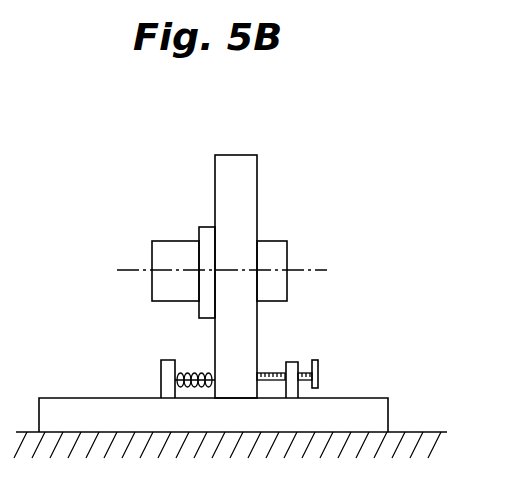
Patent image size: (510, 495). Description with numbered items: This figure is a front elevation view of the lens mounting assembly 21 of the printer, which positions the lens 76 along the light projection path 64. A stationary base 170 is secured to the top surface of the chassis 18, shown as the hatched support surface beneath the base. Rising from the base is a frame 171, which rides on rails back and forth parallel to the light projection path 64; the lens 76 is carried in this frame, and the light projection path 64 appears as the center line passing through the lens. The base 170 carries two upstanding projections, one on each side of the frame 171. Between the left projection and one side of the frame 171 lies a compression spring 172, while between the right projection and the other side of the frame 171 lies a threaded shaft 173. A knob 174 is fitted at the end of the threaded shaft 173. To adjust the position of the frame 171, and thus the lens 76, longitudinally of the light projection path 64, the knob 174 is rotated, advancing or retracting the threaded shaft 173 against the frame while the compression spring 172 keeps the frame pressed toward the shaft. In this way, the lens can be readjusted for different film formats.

The chassis 18 is at (22, 430).
The lens mounting assembly 21 is at (216, 267).
The light projection path 64 is at (130, 264).
The lens 76 is at (283, 241).
The stationary base 170 is at (107, 375).
The frame 171 is at (251, 155).
The compression spring 172 is at (193, 372).
The threaded shaft 173 is at (268, 372).
The knob 174 is at (319, 361).